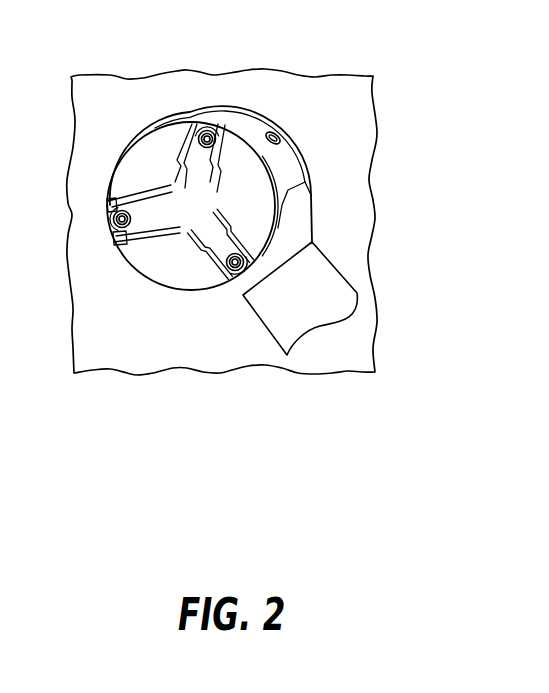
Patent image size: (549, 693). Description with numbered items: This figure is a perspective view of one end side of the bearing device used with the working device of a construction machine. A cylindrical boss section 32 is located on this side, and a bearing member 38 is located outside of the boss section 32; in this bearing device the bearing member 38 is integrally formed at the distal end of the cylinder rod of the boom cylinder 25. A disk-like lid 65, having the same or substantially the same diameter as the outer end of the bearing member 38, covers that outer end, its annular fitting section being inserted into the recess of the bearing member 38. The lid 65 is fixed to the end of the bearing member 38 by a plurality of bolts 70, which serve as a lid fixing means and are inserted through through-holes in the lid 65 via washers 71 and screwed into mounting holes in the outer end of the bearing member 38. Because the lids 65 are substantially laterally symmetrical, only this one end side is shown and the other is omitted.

The boom cylinder 25 is at (346, 261).
The boss section 32 is at (343, 110).
The bearing member 38 is at (258, 137).
The lid 65 is at (137, 176).
The bolt 70 is at (207, 128).
The washer 71 is at (218, 122).